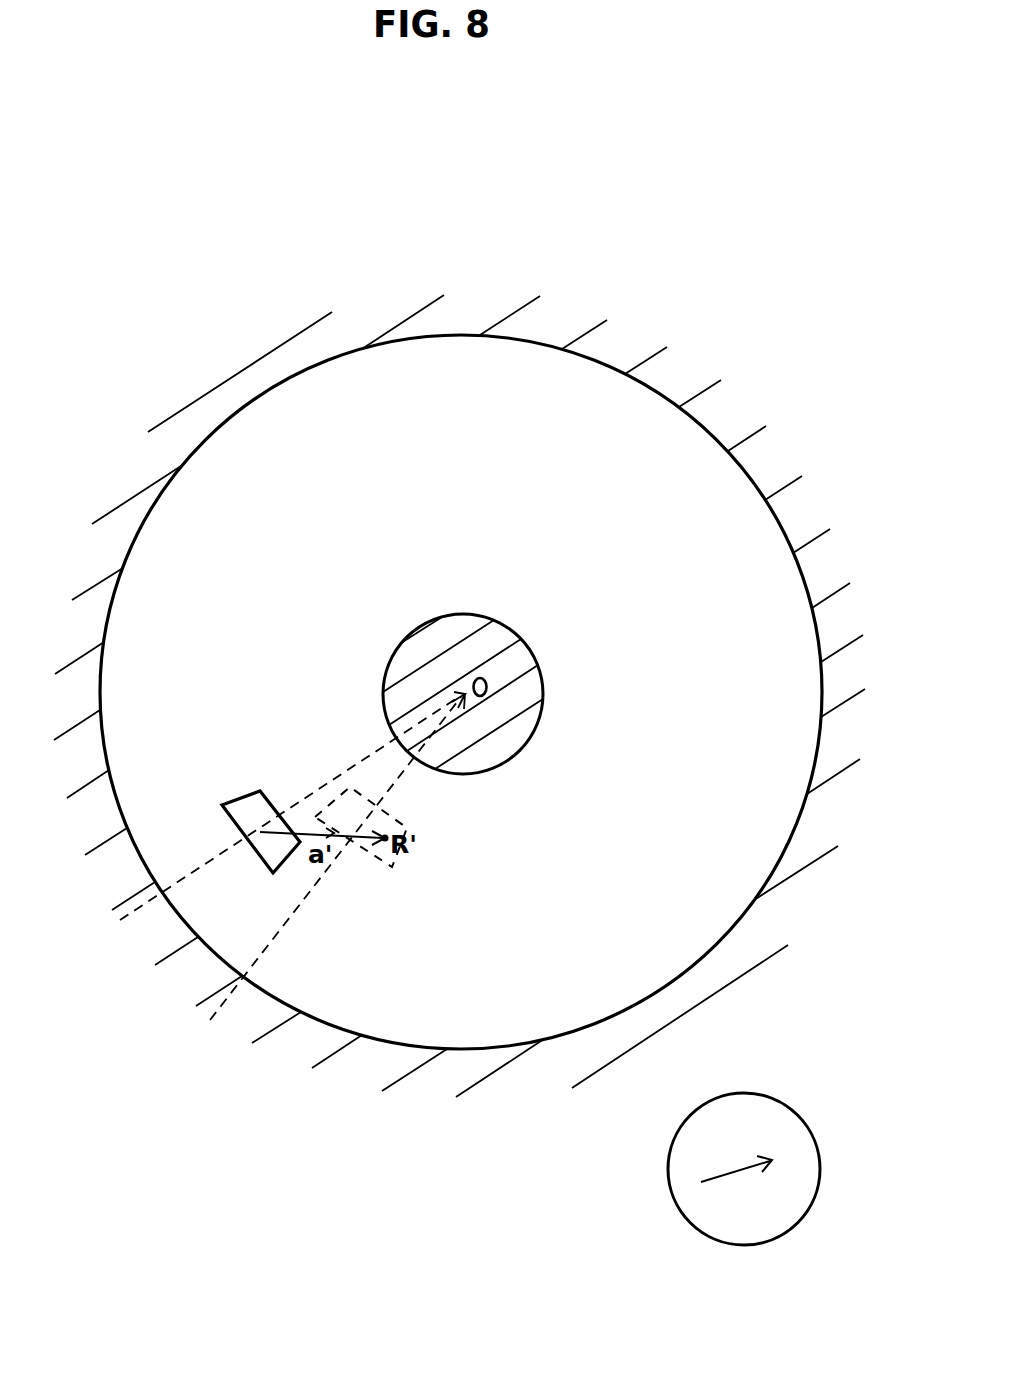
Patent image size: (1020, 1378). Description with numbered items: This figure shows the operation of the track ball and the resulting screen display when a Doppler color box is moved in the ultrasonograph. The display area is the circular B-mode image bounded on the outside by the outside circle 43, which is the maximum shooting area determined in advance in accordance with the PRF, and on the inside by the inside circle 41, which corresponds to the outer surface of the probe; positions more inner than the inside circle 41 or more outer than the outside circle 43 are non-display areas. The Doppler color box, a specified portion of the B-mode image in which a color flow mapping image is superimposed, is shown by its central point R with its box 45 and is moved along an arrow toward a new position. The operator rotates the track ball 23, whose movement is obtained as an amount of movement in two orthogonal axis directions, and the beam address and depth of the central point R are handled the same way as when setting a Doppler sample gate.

The track ball 23 is at (680, 1211).
The inside circle 41 is at (532, 737).
The outside circle 43 is at (541, 1046).
The region R (displayed object) 45 is at (236, 798).